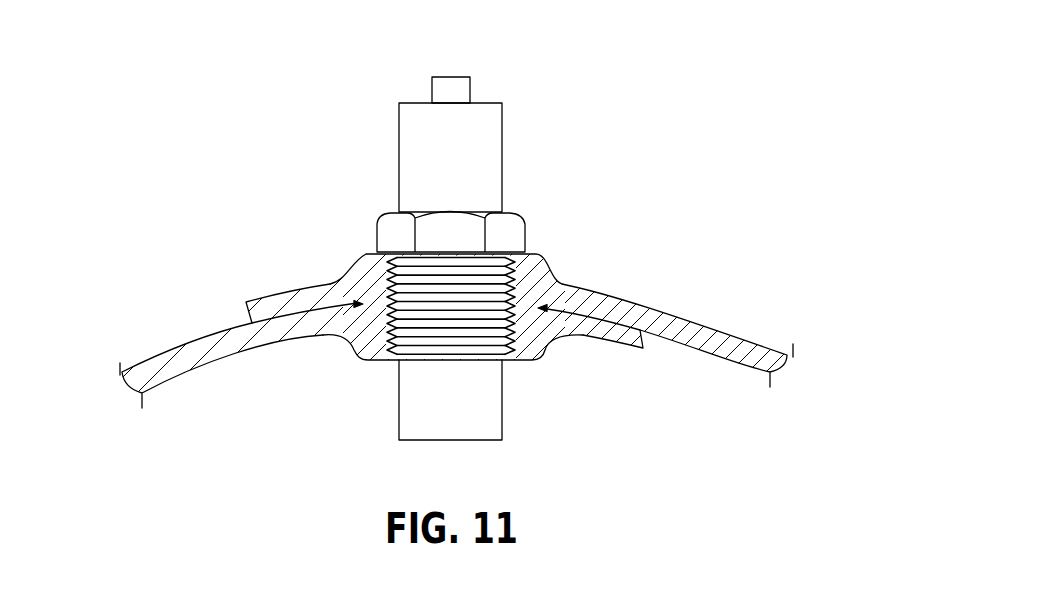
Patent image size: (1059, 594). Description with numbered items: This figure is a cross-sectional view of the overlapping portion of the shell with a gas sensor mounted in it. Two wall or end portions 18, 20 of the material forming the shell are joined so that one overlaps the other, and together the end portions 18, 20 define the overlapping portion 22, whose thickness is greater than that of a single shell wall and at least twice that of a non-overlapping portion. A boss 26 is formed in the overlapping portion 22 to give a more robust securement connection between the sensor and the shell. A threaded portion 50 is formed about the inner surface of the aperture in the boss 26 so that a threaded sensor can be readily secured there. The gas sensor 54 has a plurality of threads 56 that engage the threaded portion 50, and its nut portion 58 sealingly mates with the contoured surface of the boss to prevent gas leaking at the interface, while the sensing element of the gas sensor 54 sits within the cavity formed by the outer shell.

The end portion 18 is at (752, 335).
The end portion 20 is at (623, 345).
The overlapping portion 22 is at (290, 292).
The boss 26 is at (543, 256).
The threaded portion 50 is at (393, 322).
The gas sensor 54 is at (503, 99).
The threads 56 is at (467, 338).
The nut portion 58 is at (383, 210).